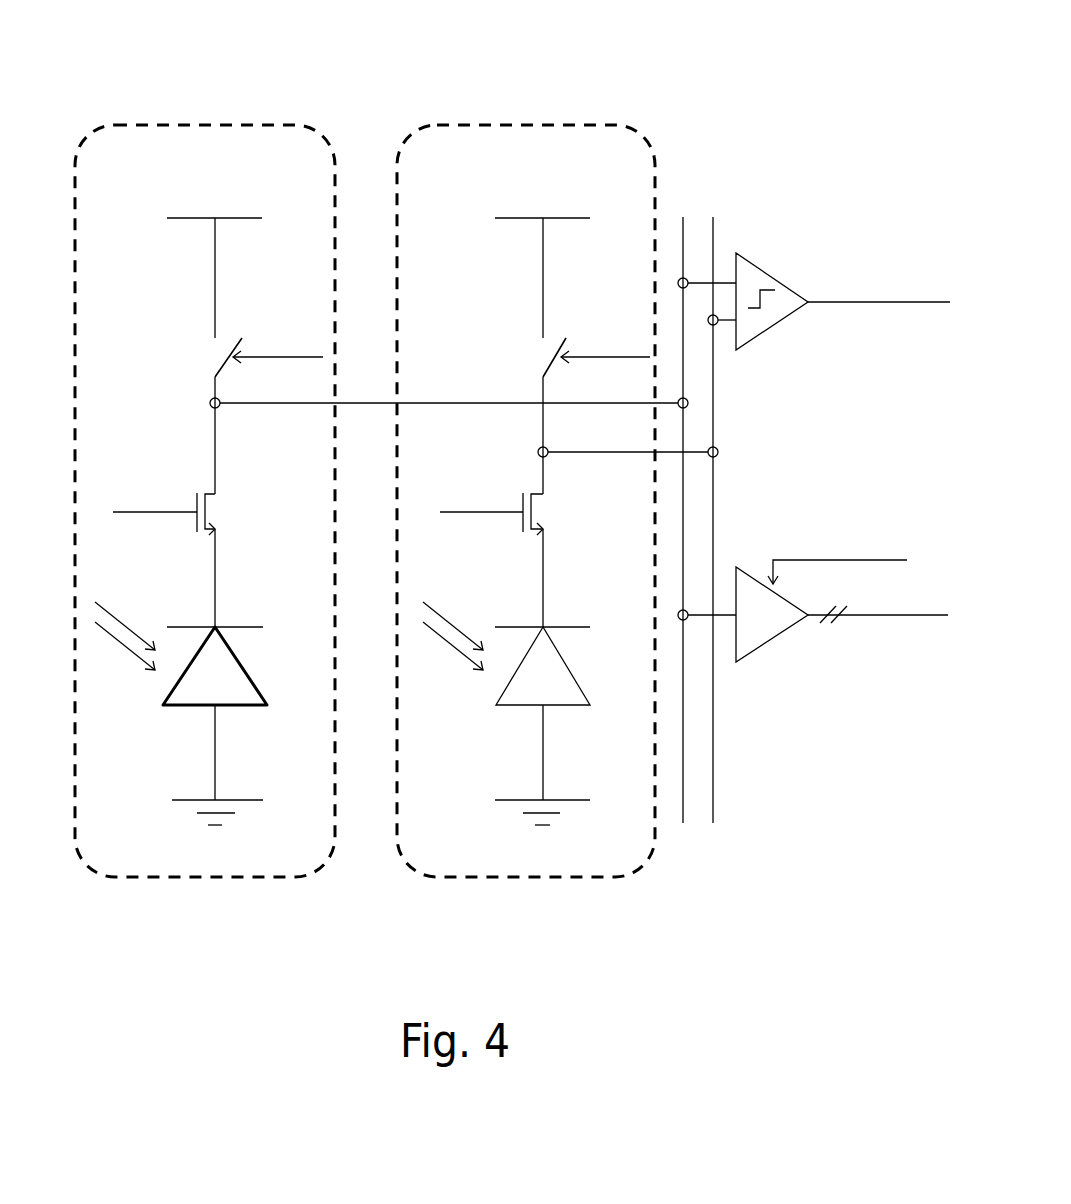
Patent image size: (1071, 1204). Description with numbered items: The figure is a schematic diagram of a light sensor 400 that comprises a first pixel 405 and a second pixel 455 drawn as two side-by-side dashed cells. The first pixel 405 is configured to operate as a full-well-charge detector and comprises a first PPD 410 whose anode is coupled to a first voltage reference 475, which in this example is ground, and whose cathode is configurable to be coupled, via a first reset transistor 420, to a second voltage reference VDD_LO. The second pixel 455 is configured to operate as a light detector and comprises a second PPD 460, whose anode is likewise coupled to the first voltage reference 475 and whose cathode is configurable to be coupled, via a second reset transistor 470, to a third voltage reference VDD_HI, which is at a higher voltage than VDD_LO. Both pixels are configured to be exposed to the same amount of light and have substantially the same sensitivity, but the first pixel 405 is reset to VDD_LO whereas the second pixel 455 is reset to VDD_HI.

The light sensor 400 is at (748, 76).
The first pixel 405 is at (513, 125).
The first PPD 410 is at (527, 695).
The first reset transistor 420 is at (566, 338).
The second pixel 455 is at (200, 125).
The second PPD 460 is at (202, 682).
The second reset transistor 470 is at (242, 338).
The first voltage reference 475 is at (253, 803).